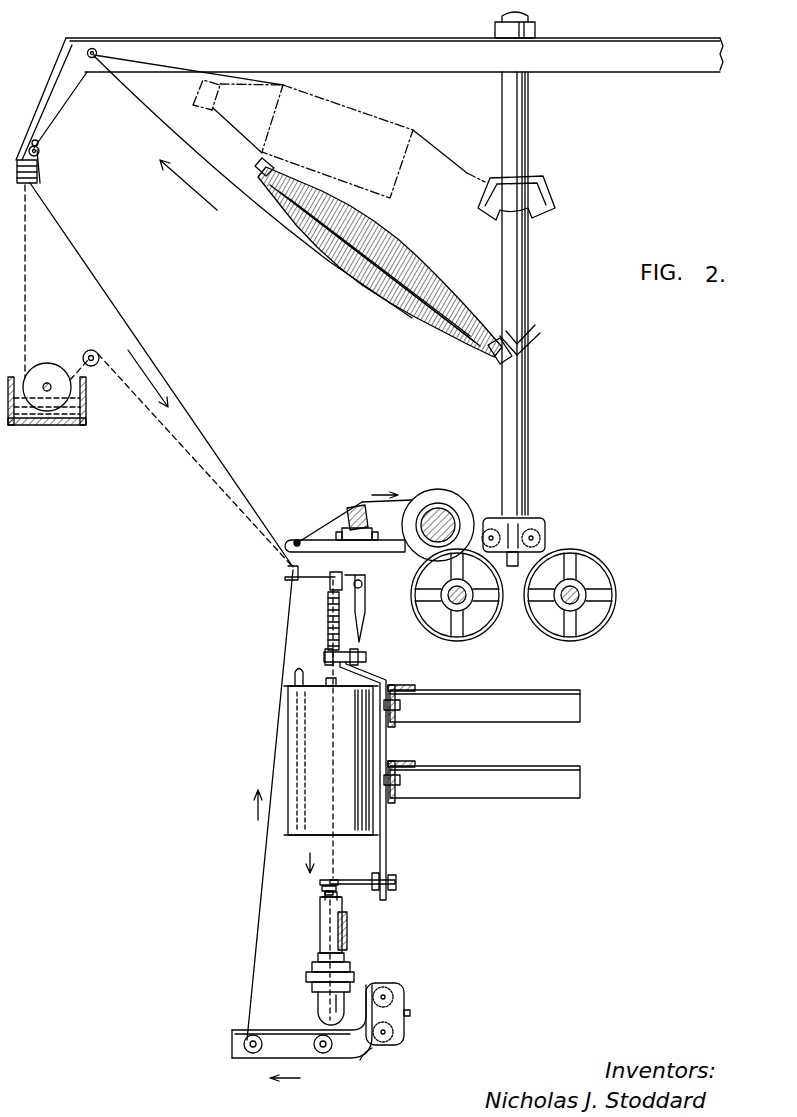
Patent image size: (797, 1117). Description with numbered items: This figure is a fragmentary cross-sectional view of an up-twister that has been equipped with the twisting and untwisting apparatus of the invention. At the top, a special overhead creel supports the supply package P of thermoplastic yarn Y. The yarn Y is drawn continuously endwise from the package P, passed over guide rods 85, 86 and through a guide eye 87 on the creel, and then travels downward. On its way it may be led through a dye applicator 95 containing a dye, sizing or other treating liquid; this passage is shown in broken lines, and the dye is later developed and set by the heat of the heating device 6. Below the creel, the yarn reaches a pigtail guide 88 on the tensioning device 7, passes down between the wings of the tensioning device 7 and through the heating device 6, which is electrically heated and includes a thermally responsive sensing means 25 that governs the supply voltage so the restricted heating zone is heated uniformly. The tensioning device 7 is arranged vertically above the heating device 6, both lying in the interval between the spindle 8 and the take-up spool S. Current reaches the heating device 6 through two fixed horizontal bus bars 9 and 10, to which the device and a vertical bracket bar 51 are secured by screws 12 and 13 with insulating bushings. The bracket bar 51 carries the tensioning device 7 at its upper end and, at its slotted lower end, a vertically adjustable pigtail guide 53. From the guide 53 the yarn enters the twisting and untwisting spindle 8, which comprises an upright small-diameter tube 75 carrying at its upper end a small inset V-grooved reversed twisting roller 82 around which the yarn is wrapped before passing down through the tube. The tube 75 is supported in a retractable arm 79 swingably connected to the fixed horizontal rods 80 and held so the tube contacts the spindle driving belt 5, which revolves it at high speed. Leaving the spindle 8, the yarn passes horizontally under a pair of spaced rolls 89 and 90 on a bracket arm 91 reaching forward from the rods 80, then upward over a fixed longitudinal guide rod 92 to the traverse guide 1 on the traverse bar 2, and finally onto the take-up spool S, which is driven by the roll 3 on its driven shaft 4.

The guide rod 85 is at (94, 49).
The guide rod 86 is at (41, 151).
The guide eye 87 is at (42, 180).
The dye applicator 95 is at (47, 427).
The thermoplastic yarn Y is at (143, 350).
The package P is at (397, 318).
The guide 1 is at (357, 502).
The traverse bar 2 is at (367, 515).
The take-up spool S is at (440, 490).
The guide rod 92 is at (297, 540).
The pigtail guide 88 is at (288, 577).
The yarn tensioning device 7 is at (366, 620).
The driven shaft 4 is at (451, 602).
The roll 3 is at (492, 627).
The bus bar 9 is at (400, 686).
The bus bar 10 is at (397, 766).
The screw 12 is at (402, 702).
The screw 13 is at (402, 777).
The thermally responsive sensing means 25 is at (298, 719).
The heating device 6 is at (288, 812).
The vertical bracket bar 51 is at (387, 828).
The pigtail guide 53 is at (321, 886).
The reversed twisting roller 82 is at (330, 903).
The tube 75 is at (322, 940).
The spindle driving belt 5 is at (347, 940).
The twisting and untwisting spindle 8 is at (352, 968).
The retractable arm 79 is at (308, 978).
The horizontal rods 80 is at (406, 1032).
The roll 90 is at (246, 1044).
The roll 89 is at (325, 1053).
The bracket arm 91 is at (362, 1060).